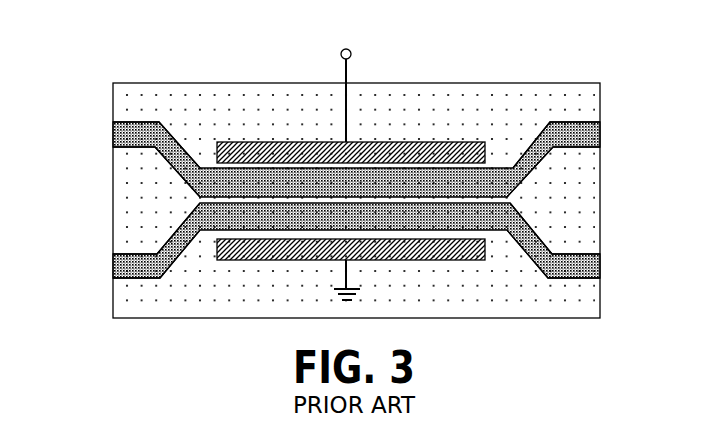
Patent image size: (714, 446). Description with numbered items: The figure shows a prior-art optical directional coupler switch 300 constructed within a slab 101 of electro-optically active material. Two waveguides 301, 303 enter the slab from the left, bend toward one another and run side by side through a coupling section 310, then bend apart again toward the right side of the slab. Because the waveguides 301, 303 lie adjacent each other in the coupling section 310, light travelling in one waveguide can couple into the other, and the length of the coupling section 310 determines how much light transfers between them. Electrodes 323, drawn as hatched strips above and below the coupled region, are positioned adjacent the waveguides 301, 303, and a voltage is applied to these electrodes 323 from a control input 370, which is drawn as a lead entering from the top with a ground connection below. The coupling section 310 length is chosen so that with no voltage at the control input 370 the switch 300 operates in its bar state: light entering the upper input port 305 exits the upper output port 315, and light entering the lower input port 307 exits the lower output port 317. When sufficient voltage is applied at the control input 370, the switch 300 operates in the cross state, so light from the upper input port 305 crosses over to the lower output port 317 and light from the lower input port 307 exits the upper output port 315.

The directional coupler switch 300 is at (356, 171).
The slab of electro-optically active material 101 is at (445, 83).
The control input 370 is at (349, 72).
The waveguide 301 is at (487, 180).
The waveguide 303 is at (497, 222).
The upper input port 305 is at (113, 138).
The upper output port 315 is at (600, 133).
The lower input port 307 is at (113, 263).
The lower output port 317 is at (600, 268).
The electrodes 323 is at (280, 142).
The coupling section 310 is at (224, 138).